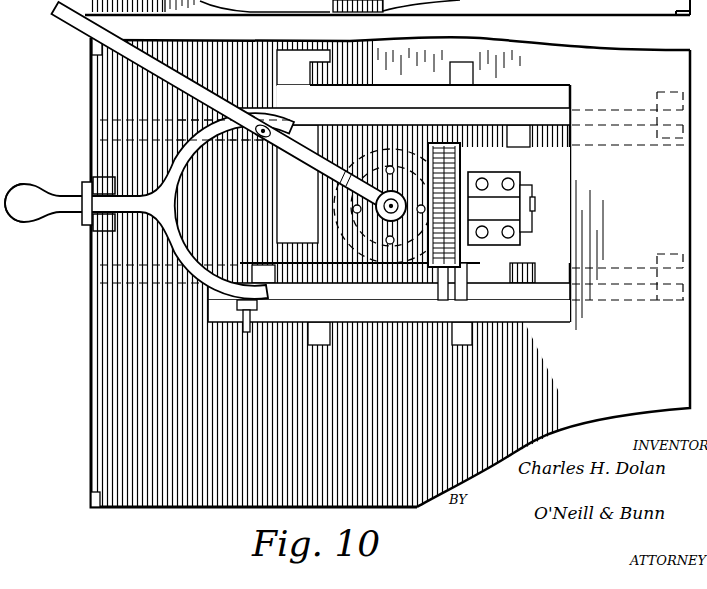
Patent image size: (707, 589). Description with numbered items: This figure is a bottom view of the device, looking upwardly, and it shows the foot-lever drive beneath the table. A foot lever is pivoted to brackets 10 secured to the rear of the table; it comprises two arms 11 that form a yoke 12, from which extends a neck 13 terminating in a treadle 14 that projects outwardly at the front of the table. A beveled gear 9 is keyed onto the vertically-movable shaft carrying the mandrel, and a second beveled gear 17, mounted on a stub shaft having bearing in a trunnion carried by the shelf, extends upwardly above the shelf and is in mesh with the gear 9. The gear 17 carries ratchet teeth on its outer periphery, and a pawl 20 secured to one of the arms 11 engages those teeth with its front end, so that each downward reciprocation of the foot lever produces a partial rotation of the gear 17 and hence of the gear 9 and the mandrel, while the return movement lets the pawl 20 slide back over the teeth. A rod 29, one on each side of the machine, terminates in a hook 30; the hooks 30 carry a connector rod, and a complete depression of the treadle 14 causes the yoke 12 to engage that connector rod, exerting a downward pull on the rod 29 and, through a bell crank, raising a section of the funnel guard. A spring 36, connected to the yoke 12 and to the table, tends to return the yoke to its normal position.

The beveled gear 9 is at (405, 204).
The brackets 10 is at (390, 272).
The arms 11 is at (404, 116).
The yoke 12 is at (165, 222).
The neck 13 is at (132, 210).
The treadle 14 is at (44, 212).
The beveled gear 17 is at (463, 168).
The pawl 20 is at (459, 272).
The rod 29 is at (190, 88).
The hook 30 is at (257, 306).
The spring 36 is at (234, 169).